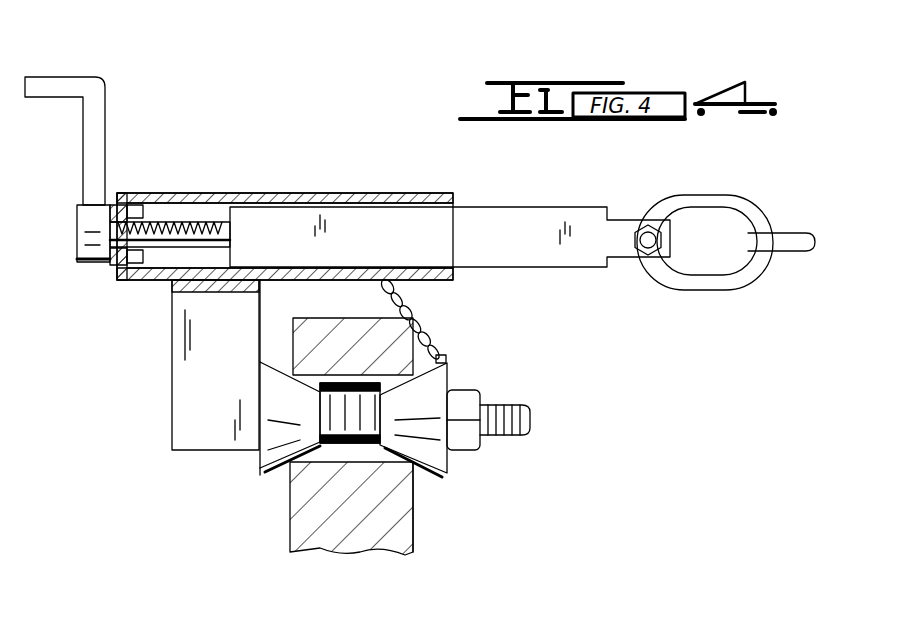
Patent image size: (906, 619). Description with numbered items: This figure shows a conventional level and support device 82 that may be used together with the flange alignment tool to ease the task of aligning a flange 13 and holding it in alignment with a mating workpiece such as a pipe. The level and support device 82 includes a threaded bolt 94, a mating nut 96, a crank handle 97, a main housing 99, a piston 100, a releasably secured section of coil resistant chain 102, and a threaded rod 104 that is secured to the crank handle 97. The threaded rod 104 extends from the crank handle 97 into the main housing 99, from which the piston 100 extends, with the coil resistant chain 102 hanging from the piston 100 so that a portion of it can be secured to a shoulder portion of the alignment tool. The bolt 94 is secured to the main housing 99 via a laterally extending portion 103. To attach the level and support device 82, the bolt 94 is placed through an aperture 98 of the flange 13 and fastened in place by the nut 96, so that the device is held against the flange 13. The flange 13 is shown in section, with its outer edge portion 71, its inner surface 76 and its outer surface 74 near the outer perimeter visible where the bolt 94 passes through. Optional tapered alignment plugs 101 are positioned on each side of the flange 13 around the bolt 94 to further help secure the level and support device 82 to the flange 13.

The crank handle 97 is at (49, 80).
The main housing 99 is at (262, 195).
The level and support device 82 is at (330, 190).
The threaded rod 104 is at (187, 220).
The piston 100 is at (508, 222).
The coil resistant chain 102 is at (772, 200).
The laterally extending portion 103 is at (185, 418).
The inner surface 76 is at (293, 328).
The outer edge portion 71 is at (333, 318).
The outer surface 74 is at (413, 535).
The aperture 98 is at (320, 386).
The tapered alignment plugs 101 is at (277, 460).
The mating nut 96 is at (480, 448).
The threaded bolt 94 is at (500, 410).
The flange 13 is at (280, 527).